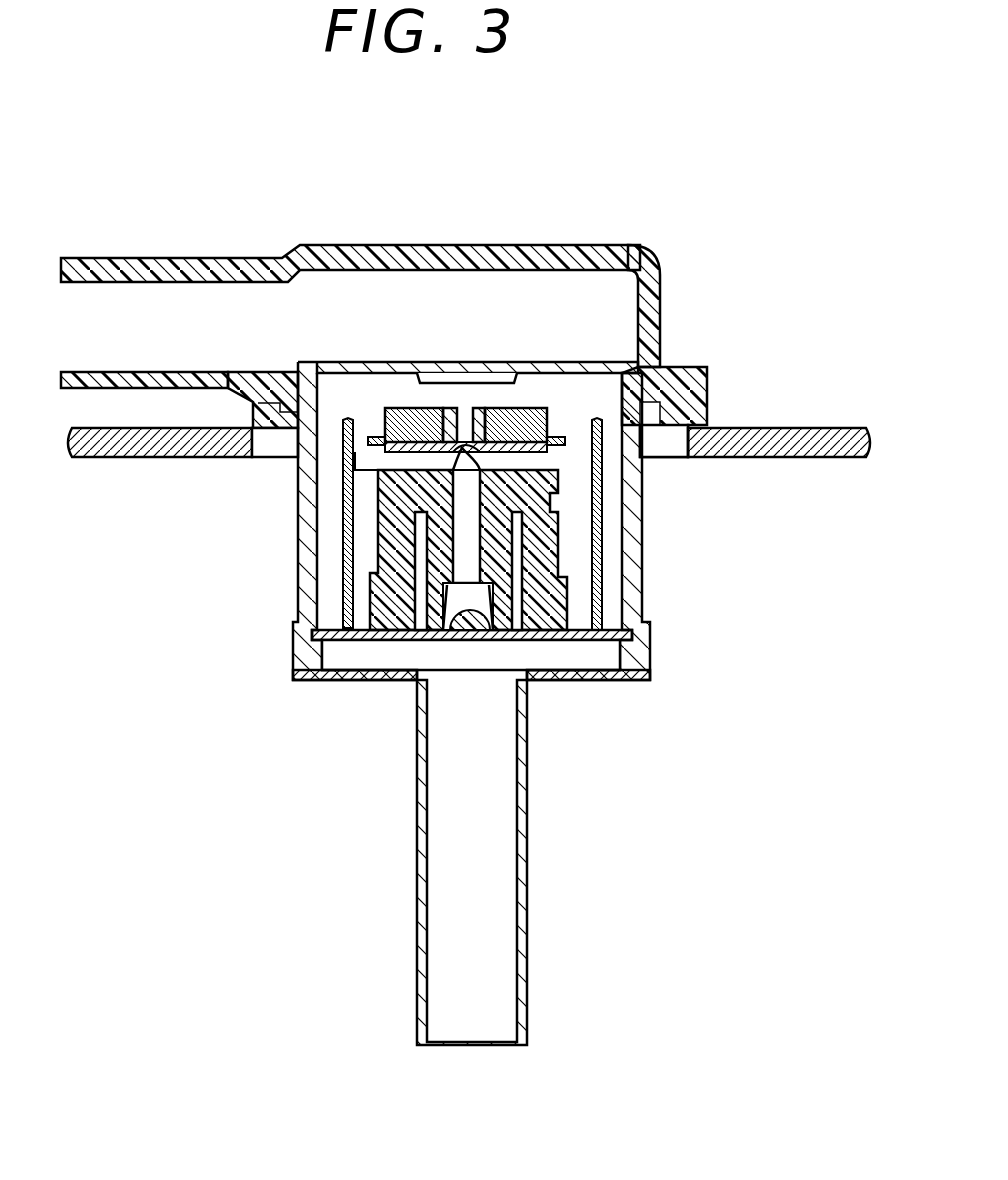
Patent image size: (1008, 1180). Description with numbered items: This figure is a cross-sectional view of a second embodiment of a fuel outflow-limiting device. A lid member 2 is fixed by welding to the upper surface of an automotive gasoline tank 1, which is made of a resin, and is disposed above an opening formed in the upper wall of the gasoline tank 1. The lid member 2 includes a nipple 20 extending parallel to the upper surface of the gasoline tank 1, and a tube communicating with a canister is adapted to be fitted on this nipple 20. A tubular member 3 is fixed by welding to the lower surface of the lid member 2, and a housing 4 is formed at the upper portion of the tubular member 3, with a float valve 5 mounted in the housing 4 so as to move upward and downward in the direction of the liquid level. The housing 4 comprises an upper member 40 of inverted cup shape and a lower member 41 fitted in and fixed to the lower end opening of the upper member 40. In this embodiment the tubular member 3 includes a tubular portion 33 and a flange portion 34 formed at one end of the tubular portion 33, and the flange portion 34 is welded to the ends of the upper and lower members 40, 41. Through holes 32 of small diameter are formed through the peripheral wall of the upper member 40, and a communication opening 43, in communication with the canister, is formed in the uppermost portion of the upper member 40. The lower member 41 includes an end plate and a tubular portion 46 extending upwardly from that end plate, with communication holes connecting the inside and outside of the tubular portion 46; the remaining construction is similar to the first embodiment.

The gasoline tank 1 is at (803, 428).
The lid member 2 is at (624, 245).
The tubular member 3 is at (460, 862).
The housing 4 is at (482, 471).
The float valve 5 is at (568, 542).
The nipple 20 is at (117, 258).
The through holes 32 is at (640, 437).
The tubular portion 33 is at (526, 920).
The flange portion 34 is at (560, 683).
The upper member 40 is at (642, 493).
The lower member 41 is at (612, 624).
The communication opening 43 is at (452, 362).
The tubular portion 46 is at (345, 555).